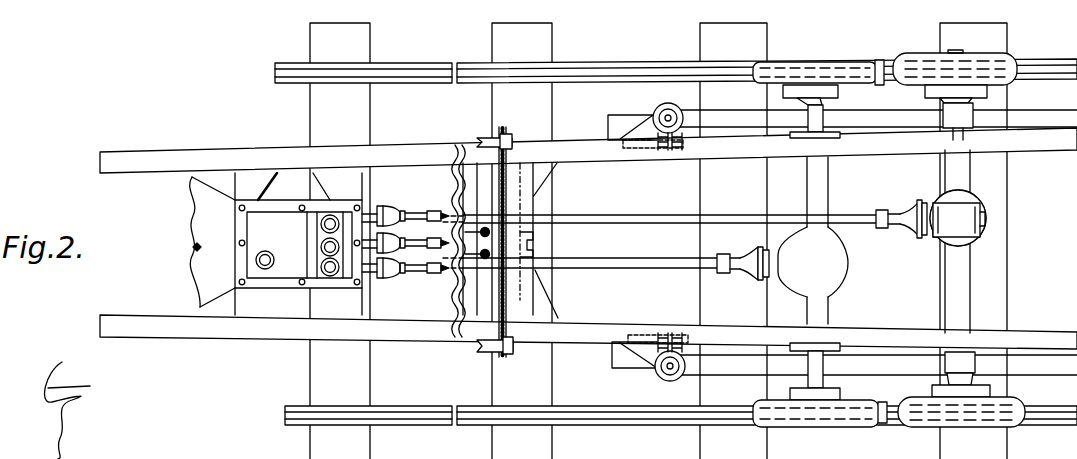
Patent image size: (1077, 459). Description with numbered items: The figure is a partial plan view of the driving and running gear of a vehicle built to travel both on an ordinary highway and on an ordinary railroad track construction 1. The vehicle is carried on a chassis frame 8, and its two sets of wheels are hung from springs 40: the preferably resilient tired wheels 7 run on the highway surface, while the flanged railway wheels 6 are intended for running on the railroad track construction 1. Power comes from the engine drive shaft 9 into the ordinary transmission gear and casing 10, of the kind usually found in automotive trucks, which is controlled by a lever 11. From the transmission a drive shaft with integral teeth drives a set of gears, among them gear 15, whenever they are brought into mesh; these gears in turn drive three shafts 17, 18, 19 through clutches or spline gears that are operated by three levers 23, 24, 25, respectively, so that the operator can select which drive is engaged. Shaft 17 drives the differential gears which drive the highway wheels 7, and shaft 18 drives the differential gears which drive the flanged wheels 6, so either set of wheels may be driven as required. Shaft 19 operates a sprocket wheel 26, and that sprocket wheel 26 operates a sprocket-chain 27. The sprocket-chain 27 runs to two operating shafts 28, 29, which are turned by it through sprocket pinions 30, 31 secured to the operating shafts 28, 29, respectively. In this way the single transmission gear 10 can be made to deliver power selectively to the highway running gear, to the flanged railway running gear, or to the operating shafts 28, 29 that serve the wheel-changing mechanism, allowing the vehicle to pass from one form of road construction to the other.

The railroad track construction 1 is at (288, 85).
The flanged railway wheels 6 is at (788, 66).
The resilient tired wheels 7 is at (918, 63).
The chassis frame 8 is at (1047, 143).
The engine drive shaft 9 is at (191, 248).
The transmission gear and casing 10 is at (279, 224).
The lever 11 is at (264, 269).
The gear 15 is at (342, 212).
The shaft 17 is at (750, 217).
The shaft 18 is at (672, 270).
The shaft 19 is at (415, 250).
The lever 23 is at (321, 226).
The lever 24 is at (321, 266).
The lever 25 is at (321, 247).
The sprocket wheel 26 is at (523, 257).
The sprocket-chain 27 is at (507, 198).
The operating shaft 28 is at (552, 339).
The operating shaft 29 is at (548, 142).
The sprocket pinion 30 is at (500, 350).
The sprocket pinion 31 is at (501, 130).
The spring 40 is at (737, 120).